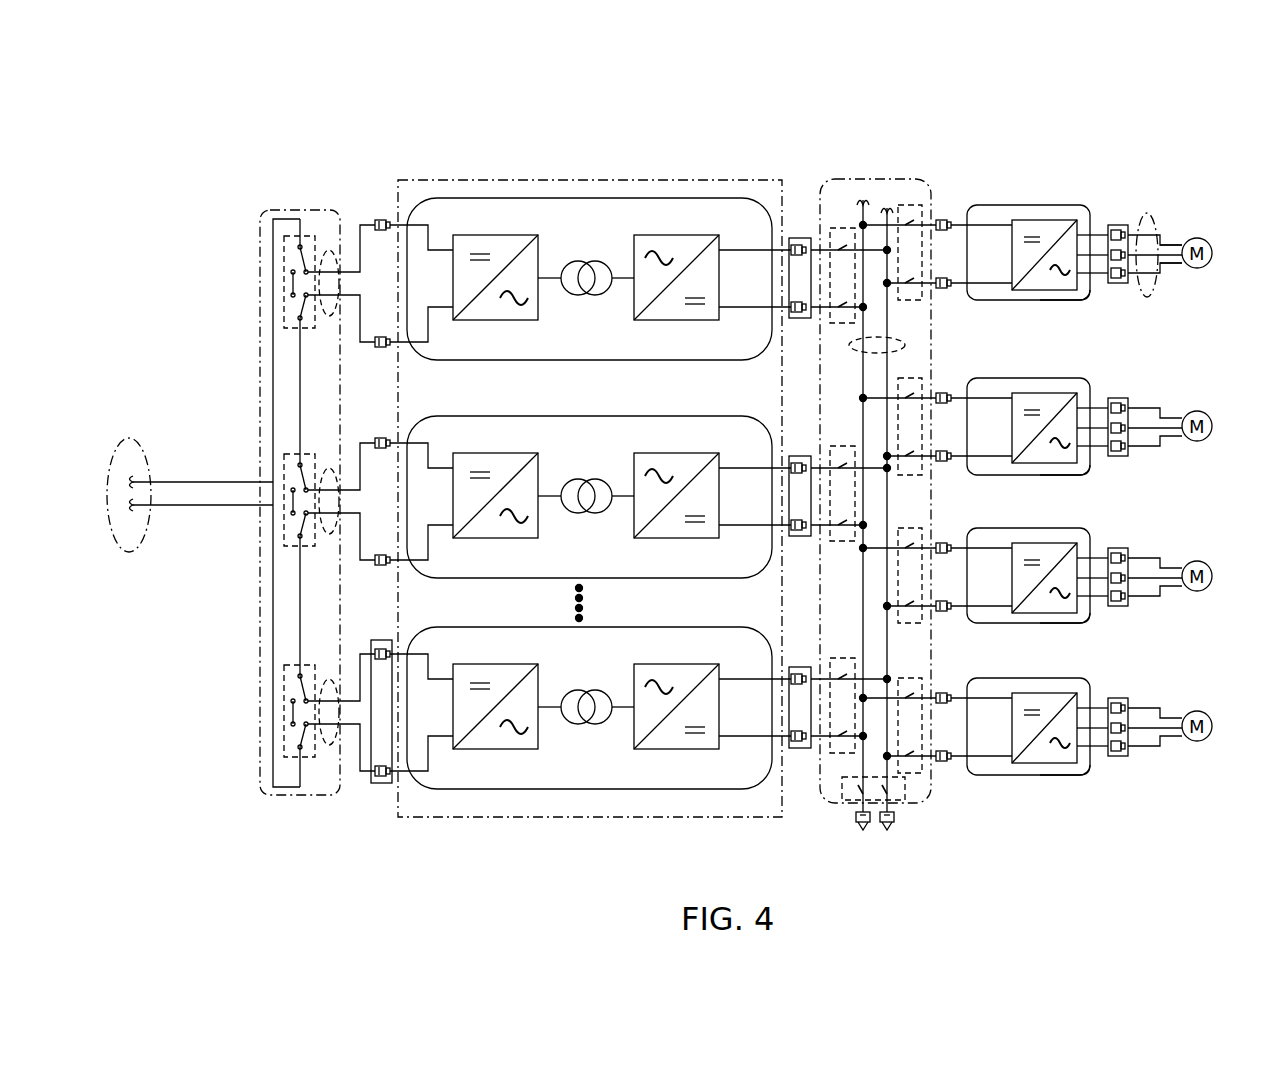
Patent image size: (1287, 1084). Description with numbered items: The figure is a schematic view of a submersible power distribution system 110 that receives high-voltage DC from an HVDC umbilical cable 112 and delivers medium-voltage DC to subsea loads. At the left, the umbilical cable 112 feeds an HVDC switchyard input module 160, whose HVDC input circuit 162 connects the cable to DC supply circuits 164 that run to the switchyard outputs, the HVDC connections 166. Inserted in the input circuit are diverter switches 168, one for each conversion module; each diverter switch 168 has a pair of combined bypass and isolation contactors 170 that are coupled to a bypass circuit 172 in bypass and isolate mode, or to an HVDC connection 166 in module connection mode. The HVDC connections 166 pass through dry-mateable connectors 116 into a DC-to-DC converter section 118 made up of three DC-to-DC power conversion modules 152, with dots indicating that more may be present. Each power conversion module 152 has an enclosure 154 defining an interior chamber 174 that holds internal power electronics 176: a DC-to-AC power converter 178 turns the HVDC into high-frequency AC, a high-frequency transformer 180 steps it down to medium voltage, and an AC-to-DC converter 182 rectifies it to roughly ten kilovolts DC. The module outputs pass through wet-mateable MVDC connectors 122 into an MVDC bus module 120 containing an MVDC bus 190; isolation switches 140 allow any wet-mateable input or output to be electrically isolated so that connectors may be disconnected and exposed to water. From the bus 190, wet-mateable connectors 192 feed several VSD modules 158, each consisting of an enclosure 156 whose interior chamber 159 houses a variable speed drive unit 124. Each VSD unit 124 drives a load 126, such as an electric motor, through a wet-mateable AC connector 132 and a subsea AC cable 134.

The submersible power distribution system 110 is at (207, 158).
The HVDC umbilical cable 112 is at (130, 553).
The dry-mateable connectors 116 is at (380, 220).
The DC-to-DC converter section 118 is at (497, 172).
The MVDC bus module 120 is at (915, 178).
The wet-mateable MVDC connectors 122 is at (790, 238).
The variable speed drive unit 124 is at (1075, 220).
The load 126 is at (1212, 253).
The wet-mateable AC connector 132 is at (1147, 215).
The subsea AC cable 134 is at (1155, 298).
The isolation switches 140 is at (840, 228).
The DC-to-DC power conversion module 152 is at (570, 196).
The enclosure 154 is at (645, 197).
The enclosure 156 is at (1120, 222).
The VSD module 158 is at (995, 207).
The interior chamber 159 is at (1068, 293).
The HVDC switchyard input module 160 is at (307, 200).
The HVDC input circuit 162 is at (266, 478).
The DC supply circuits 164 is at (273, 240).
The HVDC connections 166 is at (330, 250).
The diverter switch 168 is at (290, 283).
The combined bypass and isolation contactors 170 is at (300, 690).
The bypass circuit 172 is at (290, 500).
The interior chamber 174 is at (496, 349).
The internal power electronics 176 is at (510, 234).
The DC-to-AC power converter 178 is at (518, 322).
The high-frequency transformer 180 is at (588, 295).
The AC-to-DC converter 182 is at (662, 322).
The MVDC bus 190 is at (906, 346).
The wet-mateable connectors 192 is at (915, 205).